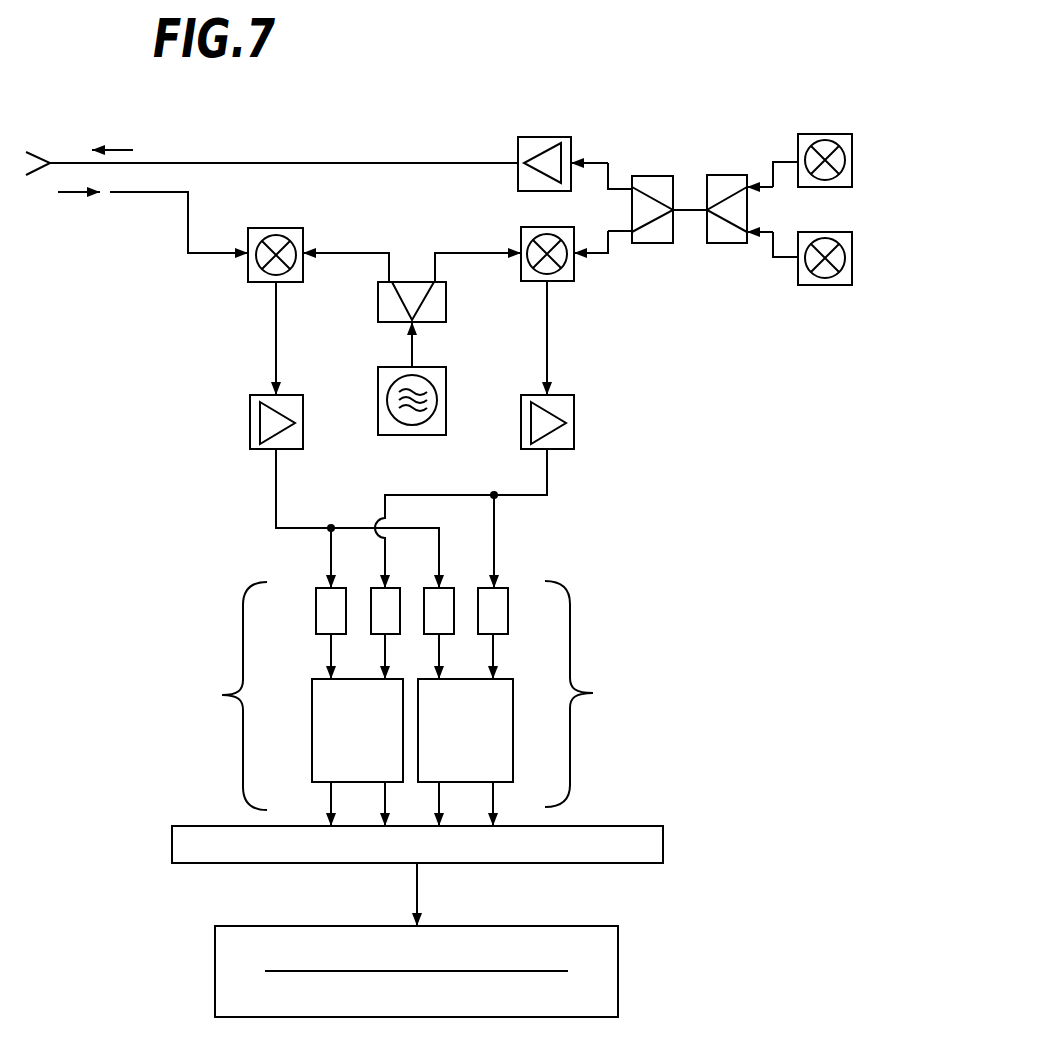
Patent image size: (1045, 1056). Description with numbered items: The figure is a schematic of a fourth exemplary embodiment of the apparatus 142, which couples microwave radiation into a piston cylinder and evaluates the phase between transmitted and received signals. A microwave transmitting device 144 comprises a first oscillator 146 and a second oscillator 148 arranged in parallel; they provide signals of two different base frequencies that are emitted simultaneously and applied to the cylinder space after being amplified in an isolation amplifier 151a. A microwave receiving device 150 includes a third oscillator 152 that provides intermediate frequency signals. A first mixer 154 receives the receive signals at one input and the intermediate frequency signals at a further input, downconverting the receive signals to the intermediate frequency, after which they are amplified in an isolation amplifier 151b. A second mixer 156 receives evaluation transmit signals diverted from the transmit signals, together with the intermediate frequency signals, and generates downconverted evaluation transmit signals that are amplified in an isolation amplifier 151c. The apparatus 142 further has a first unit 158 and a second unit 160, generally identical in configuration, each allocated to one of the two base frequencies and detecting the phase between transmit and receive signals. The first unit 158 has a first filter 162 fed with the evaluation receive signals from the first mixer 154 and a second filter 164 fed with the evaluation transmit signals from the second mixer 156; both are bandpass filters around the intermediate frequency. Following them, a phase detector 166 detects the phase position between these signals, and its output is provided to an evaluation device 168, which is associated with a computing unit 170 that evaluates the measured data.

The apparatus 142 is at (710, 135).
The microwave transmitting device 144 is at (356, 138).
The first oscillator 146 is at (825, 148).
The second oscillator 148 is at (830, 272).
The microwave receiving device 150 is at (203, 341).
The isolation amplifier 151a is at (535, 145).
The isolation amplifier 151b is at (259, 430).
The isolation amplifier 151c is at (560, 432).
The third oscillator 152 is at (414, 413).
The first mixer 154 is at (274, 245).
The second mixer 156 is at (527, 240).
The first unit 158 is at (222, 695).
The second unit 160 is at (593, 693).
The first filter 162 is at (318, 600).
The second filter 164 is at (392, 605).
The phase detector 166 is at (380, 746).
The evaluation device 168 is at (652, 843).
The computing unit 170 is at (597, 975).